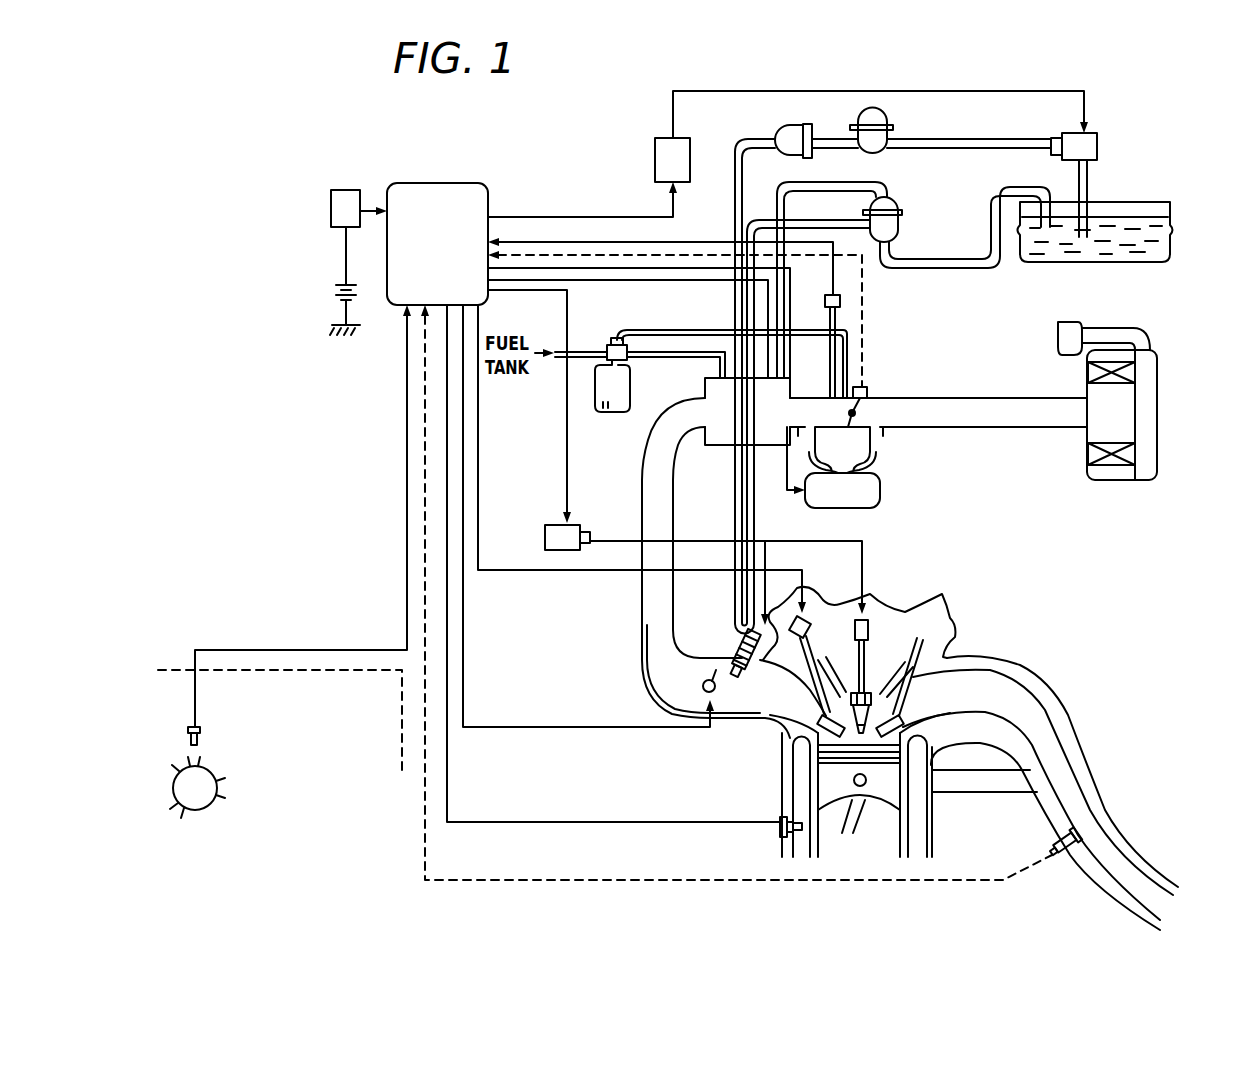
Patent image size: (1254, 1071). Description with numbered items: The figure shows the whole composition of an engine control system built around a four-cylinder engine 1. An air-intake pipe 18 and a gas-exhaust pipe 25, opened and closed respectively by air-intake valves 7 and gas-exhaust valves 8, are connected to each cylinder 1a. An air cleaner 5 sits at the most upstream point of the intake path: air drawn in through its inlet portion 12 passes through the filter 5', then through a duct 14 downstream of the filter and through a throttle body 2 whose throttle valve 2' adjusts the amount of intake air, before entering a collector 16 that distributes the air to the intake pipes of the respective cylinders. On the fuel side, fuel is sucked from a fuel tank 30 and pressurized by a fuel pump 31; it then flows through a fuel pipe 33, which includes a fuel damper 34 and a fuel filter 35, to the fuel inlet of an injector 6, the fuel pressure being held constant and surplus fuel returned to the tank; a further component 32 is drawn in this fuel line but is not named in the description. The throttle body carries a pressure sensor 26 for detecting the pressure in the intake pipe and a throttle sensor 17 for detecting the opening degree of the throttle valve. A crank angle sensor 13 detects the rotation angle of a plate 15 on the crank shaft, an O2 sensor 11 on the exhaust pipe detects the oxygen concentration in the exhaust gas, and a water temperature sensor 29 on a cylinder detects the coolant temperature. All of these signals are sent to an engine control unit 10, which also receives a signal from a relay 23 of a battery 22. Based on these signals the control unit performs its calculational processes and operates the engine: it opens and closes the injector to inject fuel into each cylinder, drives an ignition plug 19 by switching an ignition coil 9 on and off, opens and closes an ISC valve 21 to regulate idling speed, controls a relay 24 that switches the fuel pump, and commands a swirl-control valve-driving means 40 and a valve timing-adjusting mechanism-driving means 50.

The four-cylinder engine 1 is at (988, 624).
The cylinder 1a is at (930, 827).
The throttle body 2 is at (875, 450).
The throttle valve 2' is at (938, 402).
The air cleaner 5 is at (1122, 451).
The filter 5' is at (1134, 386).
The injector 6 is at (735, 638).
The air-intake valve 7 is at (812, 642).
The gas-exhaust valve 8 is at (912, 628).
The ignition coil 9 is at (545, 527).
The engine control unit 10 is at (438, 183).
The O2 sensor 11 is at (1065, 860).
The inlet portion 12 is at (1058, 335).
The crank angle sensor 13 is at (202, 730).
The duct 14 is at (1035, 425).
The plate 15 is at (227, 826).
The collector 16 is at (720, 413).
The throttle sensor 17 is at (868, 392).
The air-intake pipe 18 is at (712, 722).
The ignition plug 19 is at (867, 613).
The ISC valve 21 is at (882, 492).
The battery 22 is at (335, 292).
The relay 23 is at (347, 190).
The relay 24 is at (655, 153).
The gas-exhaust pipe 25 is at (1065, 698).
The pressure sensor 26 is at (843, 300).
The water temperature sensor 29 is at (778, 837).
The fuel tank 30 is at (1160, 212).
The fuel pump 31 is at (1097, 148).
The fuel filter 32 is at (900, 225).
The fuel pipe 33 is at (730, 510).
The fuel damper 34 is at (876, 108).
The fuel filter 35 is at (785, 125).
The swirl-control valve-driving means 40 is at (703, 686).
The valve timing-adjusting mechanism-driving means 50 is at (800, 645).